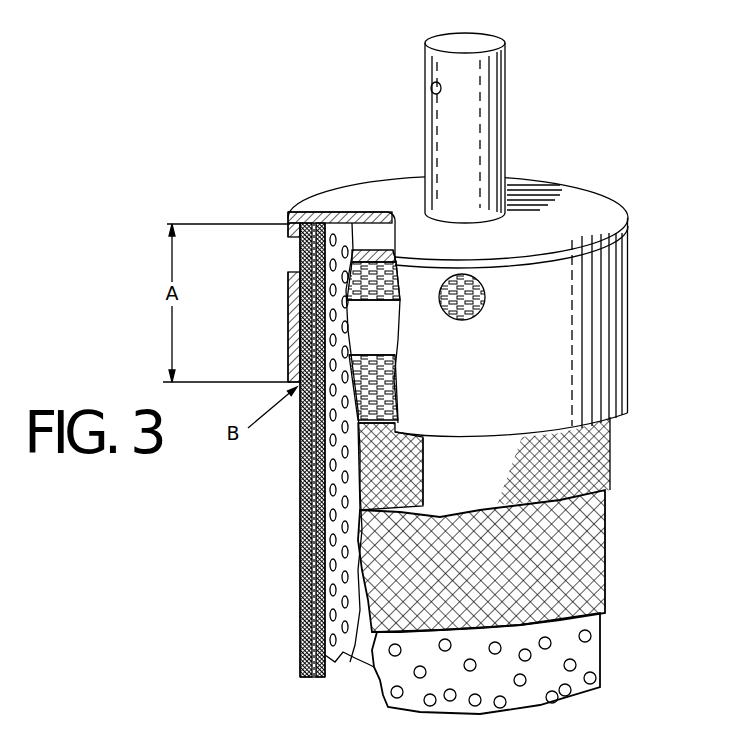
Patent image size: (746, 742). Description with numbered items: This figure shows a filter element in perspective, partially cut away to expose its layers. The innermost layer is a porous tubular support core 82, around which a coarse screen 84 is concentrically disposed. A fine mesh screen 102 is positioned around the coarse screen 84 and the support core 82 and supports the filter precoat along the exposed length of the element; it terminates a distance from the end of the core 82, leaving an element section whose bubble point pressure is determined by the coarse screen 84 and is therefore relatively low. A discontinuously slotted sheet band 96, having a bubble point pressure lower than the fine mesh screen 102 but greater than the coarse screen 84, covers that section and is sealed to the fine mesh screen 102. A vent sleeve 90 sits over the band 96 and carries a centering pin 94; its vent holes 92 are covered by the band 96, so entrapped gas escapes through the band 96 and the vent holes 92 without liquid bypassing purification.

The tubular support core 82 is at (337, 665).
The coarse screen 84 is at (303, 648).
The vent sleeve 90 is at (606, 335).
The vent hole 92 is at (290, 255).
The centering pin 94 is at (440, 119).
The discontinuously slotted sheet band 96 is at (290, 244).
The fine mesh screen 102 is at (303, 568).